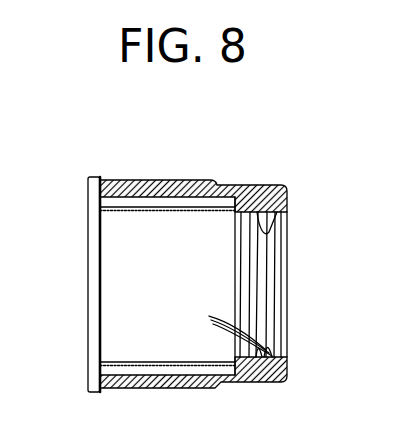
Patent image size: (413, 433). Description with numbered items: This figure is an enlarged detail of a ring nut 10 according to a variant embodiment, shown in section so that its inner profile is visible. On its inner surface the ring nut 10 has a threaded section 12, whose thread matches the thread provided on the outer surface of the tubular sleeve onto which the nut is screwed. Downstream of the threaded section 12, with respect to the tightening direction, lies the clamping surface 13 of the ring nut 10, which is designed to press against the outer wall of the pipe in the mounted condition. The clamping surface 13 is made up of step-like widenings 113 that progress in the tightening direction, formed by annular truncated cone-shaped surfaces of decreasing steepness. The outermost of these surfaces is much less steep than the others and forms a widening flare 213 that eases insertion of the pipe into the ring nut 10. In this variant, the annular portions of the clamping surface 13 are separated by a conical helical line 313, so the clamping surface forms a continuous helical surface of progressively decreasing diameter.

The ring nut 10 is at (140, 180).
The threaded section 12 is at (166, 205).
The clamping surface 13 is at (287, 228).
The step-like widenings 113 is at (226, 328).
The widening flare 213 is at (287, 348).
The conical helical line 313 is at (268, 262).